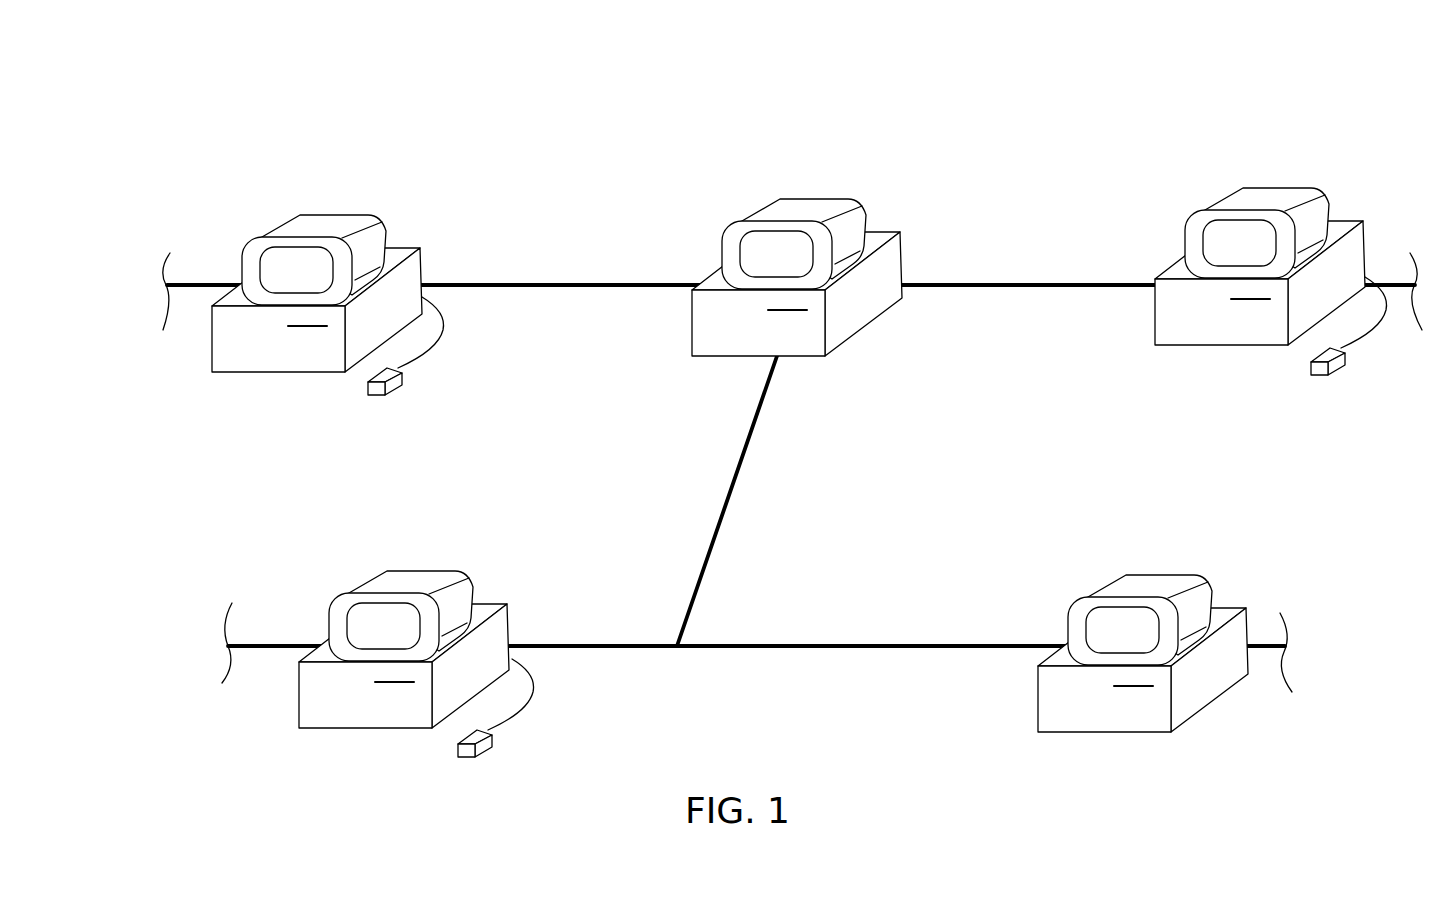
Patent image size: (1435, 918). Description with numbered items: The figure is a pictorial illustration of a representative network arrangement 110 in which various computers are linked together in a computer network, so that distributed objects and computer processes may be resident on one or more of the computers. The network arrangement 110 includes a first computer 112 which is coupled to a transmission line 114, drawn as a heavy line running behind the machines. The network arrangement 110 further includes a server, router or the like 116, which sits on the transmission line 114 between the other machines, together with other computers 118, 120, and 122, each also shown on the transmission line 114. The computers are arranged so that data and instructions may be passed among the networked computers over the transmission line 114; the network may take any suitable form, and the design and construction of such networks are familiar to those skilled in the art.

The network arrangement 110 is at (212, 122).
The first computer 112 is at (409, 250).
The transmission line 114 is at (513, 287).
The server, router or the like 116 is at (887, 232).
The other computer 118 is at (490, 603).
The other computer 120 is at (1227, 608).
The other computer 122 is at (1150, 323).